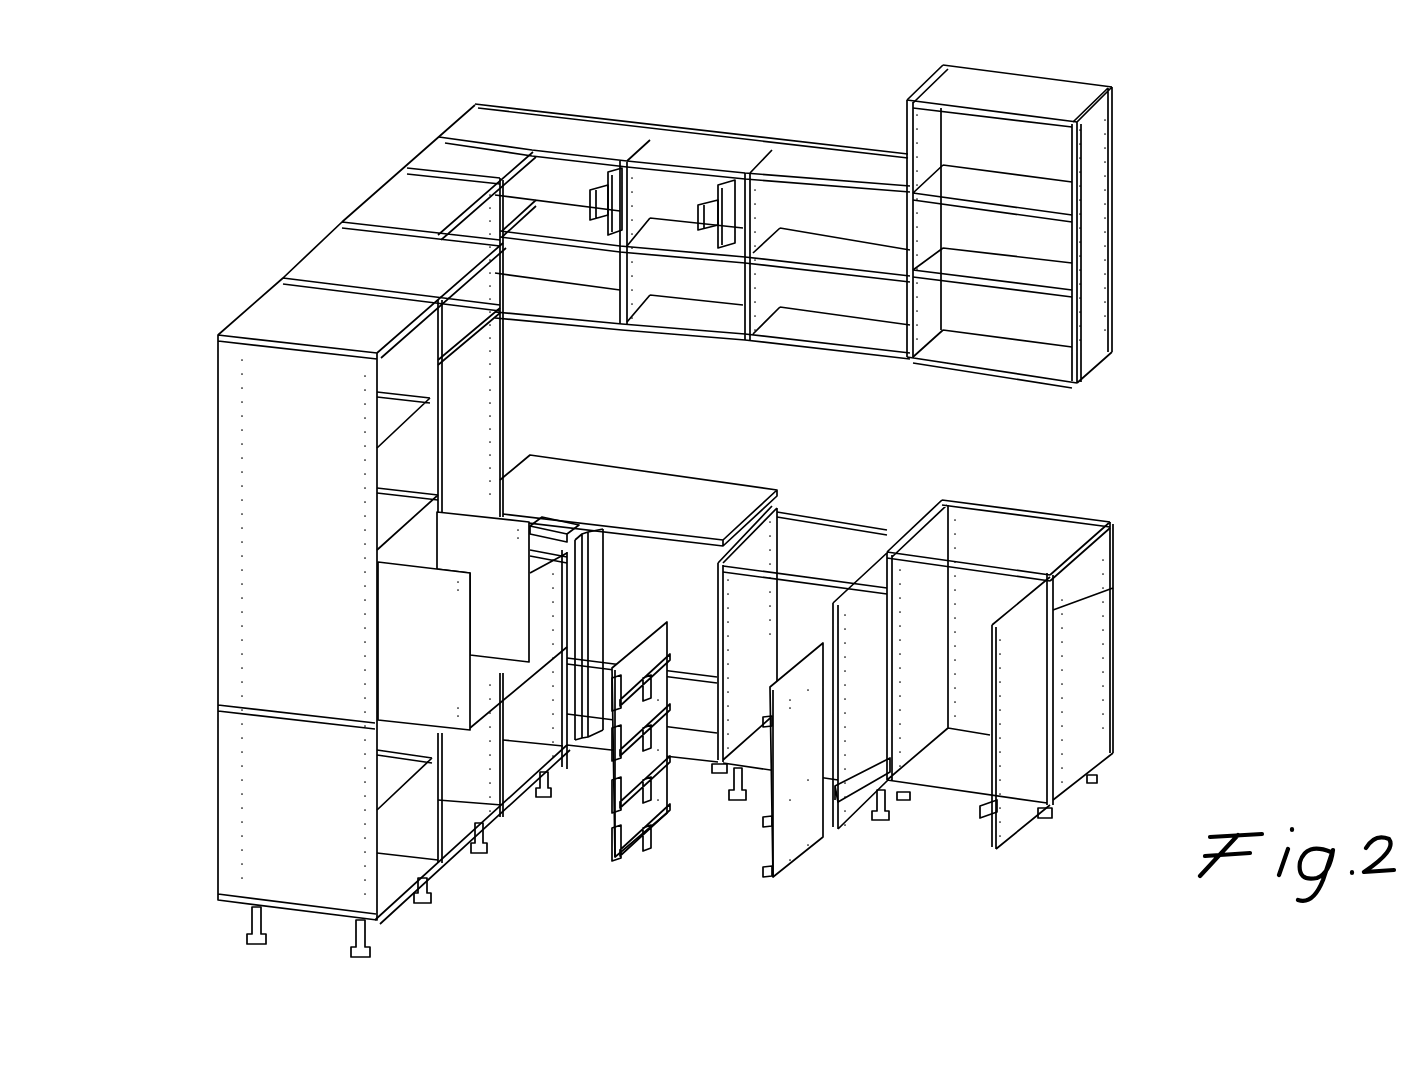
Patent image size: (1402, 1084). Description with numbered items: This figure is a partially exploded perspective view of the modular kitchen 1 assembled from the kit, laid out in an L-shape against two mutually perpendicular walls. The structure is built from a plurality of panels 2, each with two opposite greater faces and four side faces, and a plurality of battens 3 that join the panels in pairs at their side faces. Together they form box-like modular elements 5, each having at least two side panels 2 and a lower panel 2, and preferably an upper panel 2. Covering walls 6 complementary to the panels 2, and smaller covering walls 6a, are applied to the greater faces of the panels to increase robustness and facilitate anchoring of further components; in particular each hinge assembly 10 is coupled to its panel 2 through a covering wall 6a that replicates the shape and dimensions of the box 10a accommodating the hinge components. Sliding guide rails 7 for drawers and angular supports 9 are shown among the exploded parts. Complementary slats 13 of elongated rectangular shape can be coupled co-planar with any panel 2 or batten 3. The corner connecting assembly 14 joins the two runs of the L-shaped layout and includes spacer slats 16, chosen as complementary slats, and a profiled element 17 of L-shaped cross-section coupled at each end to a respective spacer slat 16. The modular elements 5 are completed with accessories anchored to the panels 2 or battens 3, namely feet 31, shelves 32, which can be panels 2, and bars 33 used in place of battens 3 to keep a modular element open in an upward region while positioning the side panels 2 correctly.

The kitchen 1 is at (1297, 212).
The panel 2 is at (1045, 90).
The batten 3 is at (622, 160).
The modular element 5 is at (420, 837).
The covering wall 6 is at (458, 543).
The covering wall of smaller dimensions 6a is at (740, 215).
The sliding guide rail 7 is at (672, 735).
The angular support 9 is at (862, 790).
The hinge assembly 10 is at (601, 168).
The box 10a is at (622, 180).
The complementary slat 13 is at (928, 540).
The corner connecting assembly 14 is at (583, 514).
The spacer slat 16 is at (552, 527).
The profiled element 17 is at (593, 572).
The foot 31 is at (250, 918).
The shelf 32 is at (815, 245).
The bar 33 is at (993, 570).